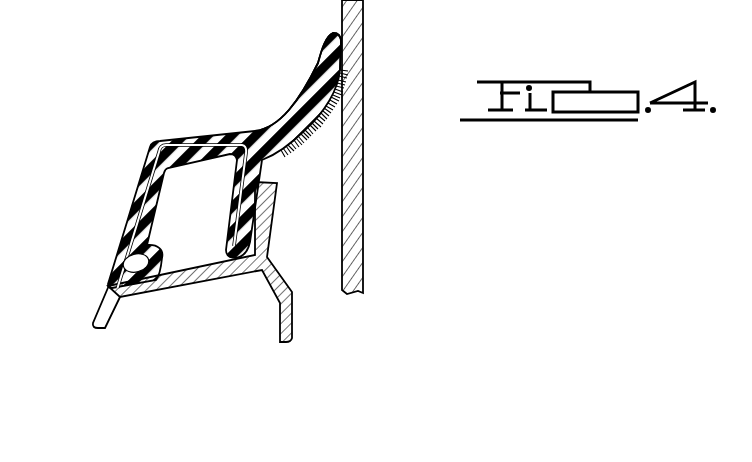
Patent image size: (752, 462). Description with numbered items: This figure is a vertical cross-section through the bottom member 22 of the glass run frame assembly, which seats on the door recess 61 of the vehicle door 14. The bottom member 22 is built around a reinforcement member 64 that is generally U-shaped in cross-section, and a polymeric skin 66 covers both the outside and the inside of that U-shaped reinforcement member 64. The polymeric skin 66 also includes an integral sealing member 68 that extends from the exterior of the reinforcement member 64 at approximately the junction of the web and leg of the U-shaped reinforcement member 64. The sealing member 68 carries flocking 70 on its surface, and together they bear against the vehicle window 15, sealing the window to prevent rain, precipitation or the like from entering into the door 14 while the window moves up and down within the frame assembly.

The vehicle door 14 is at (98, 312).
The vehicle window 15 is at (355, 110).
The bottom member 22 is at (128, 133).
The door recess 61 is at (196, 264).
The reinforcement member 64 is at (130, 218).
The polymeric skin 66 is at (137, 188).
The sealing member 68 is at (308, 105).
The flocking 70 is at (309, 150).